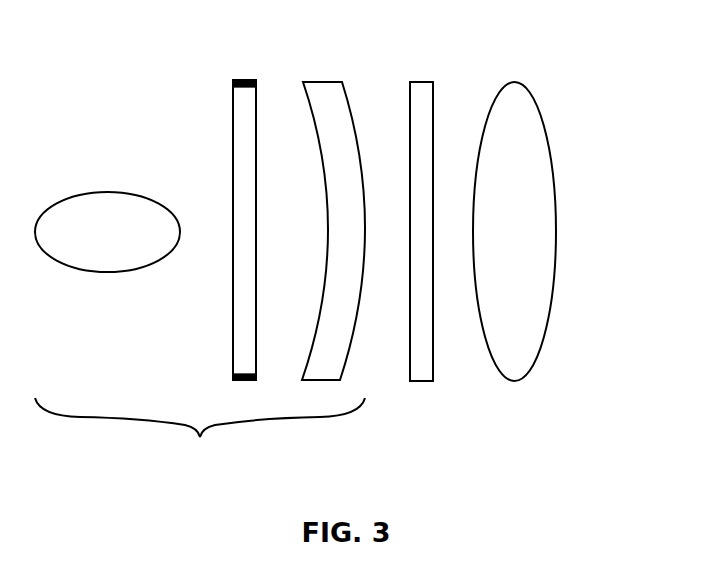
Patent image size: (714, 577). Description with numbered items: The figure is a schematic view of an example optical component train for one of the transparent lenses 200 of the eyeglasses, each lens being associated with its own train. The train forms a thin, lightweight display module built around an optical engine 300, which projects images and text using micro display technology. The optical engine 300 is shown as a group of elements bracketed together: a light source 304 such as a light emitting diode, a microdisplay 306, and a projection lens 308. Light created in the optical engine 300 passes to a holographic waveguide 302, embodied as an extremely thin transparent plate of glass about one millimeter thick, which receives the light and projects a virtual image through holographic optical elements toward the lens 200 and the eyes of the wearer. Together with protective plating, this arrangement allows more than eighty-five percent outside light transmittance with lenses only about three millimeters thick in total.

The lens 200 is at (552, 163).
The optical engine 300 is at (200, 433).
The holographic waveguide 302 is at (425, 81).
The light source 304 is at (120, 192).
The microdisplay 306 is at (247, 80).
The projection lens 308 is at (328, 81).